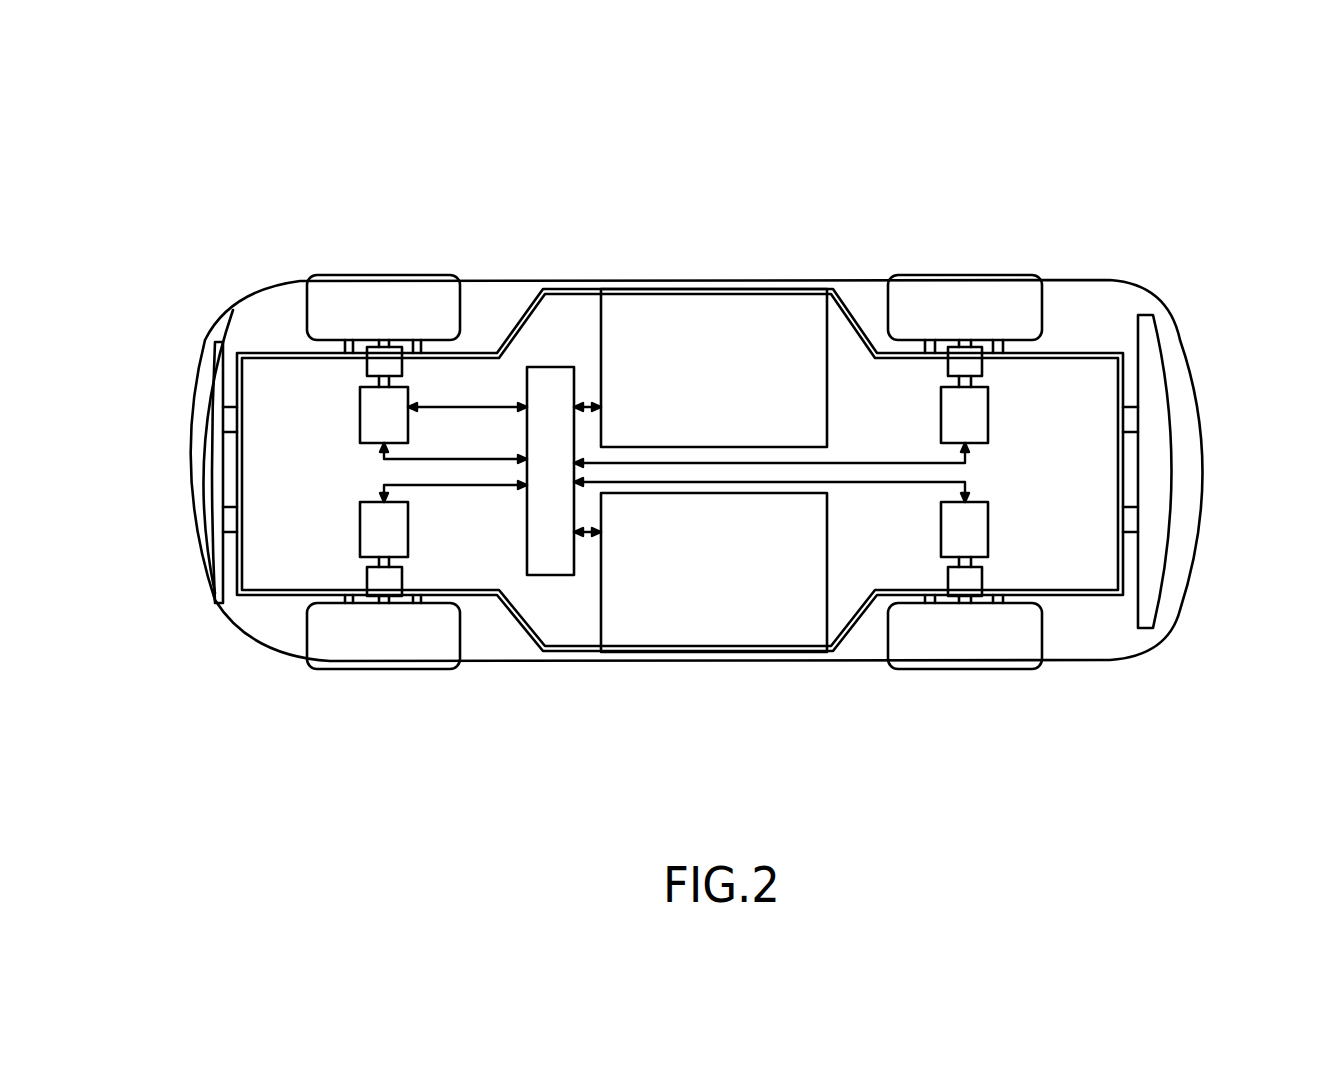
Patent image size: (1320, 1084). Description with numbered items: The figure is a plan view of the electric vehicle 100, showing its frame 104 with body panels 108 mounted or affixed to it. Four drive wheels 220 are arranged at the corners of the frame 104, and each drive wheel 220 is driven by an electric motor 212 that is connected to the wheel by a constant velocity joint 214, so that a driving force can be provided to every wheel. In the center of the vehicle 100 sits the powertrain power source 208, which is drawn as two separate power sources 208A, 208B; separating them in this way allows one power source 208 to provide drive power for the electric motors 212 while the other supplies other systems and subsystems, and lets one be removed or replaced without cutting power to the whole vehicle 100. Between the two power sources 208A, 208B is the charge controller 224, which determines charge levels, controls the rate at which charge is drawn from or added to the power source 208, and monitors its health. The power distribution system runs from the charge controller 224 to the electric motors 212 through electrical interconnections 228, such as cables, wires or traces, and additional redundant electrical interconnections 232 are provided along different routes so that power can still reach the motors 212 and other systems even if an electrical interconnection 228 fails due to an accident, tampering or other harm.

The vehicle 100 is at (1147, 183).
The frame 104 is at (1070, 598).
The body panels 108 is at (197, 595).
The power source 208 is at (732, 466).
The power source 208A is at (775, 287).
The power source 208B is at (690, 653).
The electric motor 212 is at (360, 403).
The constant velocity joints 214 is at (367, 367).
The drive wheels 220 is at (385, 275).
The charge controller 224 is at (553, 367).
The electrical interconnections 228 is at (443, 457).
The redundant electrical interconnections 232 is at (475, 405).